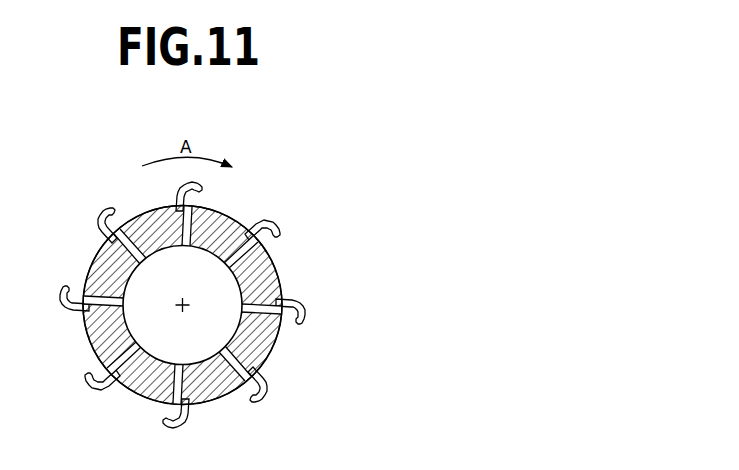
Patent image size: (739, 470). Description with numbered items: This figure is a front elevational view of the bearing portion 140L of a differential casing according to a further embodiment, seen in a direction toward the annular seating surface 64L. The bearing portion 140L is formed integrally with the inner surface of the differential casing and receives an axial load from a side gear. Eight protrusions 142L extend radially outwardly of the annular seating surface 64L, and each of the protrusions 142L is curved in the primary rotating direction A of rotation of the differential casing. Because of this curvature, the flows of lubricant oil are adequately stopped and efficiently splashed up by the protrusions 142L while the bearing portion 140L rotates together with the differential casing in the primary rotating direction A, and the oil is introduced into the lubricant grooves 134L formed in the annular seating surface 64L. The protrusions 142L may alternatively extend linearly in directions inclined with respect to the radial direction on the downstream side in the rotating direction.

The bearing portion 140L is at (217, 309).
The protrusions 142L is at (100, 212).
The lubricant grooves 134L is at (147, 226).
The annular seating surface 64L is at (87, 270).